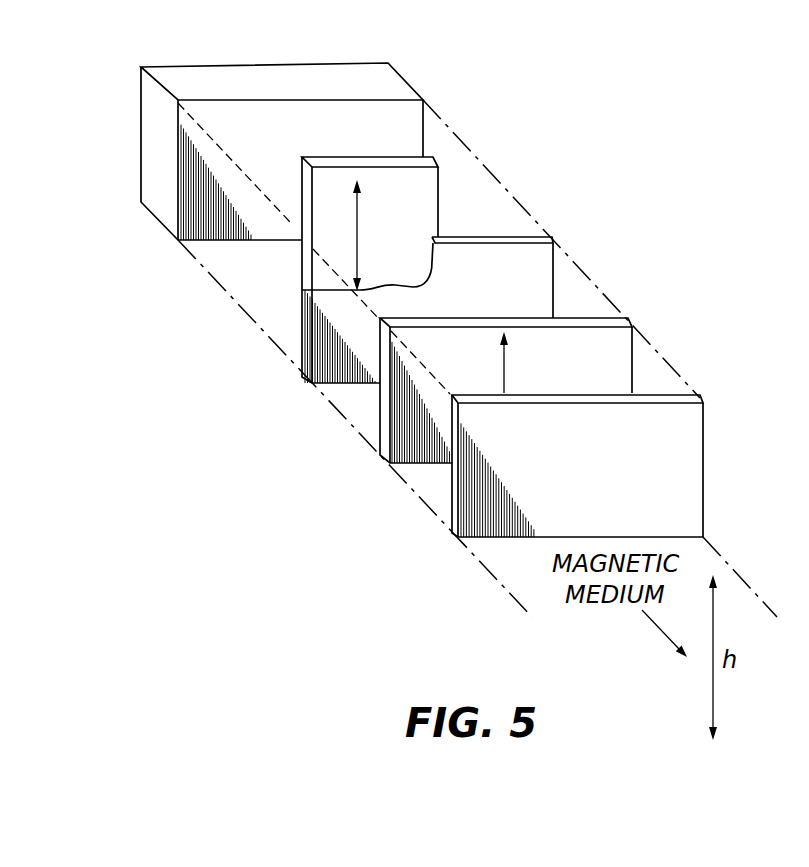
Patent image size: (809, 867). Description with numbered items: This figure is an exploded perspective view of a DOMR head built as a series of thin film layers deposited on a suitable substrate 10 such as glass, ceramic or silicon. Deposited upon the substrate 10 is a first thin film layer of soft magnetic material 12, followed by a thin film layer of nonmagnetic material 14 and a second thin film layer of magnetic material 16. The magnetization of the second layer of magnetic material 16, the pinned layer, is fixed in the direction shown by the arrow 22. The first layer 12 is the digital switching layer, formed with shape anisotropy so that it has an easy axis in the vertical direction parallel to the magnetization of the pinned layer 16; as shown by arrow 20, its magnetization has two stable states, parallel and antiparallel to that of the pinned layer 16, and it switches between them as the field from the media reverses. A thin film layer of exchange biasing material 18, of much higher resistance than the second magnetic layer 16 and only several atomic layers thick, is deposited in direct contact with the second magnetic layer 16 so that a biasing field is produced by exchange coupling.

The substrate 10 is at (354, 62).
The first thin film layer of soft magnetic material 12 is at (440, 210).
The thin film layer of nonmagnetic material 14 is at (555, 285).
The second thin film layer of magnetic material 16 is at (632, 348).
The thin film layer of exchange biasing material 18 is at (703, 435).
The arrow 20 is at (360, 237).
The arrow 22 is at (505, 372).